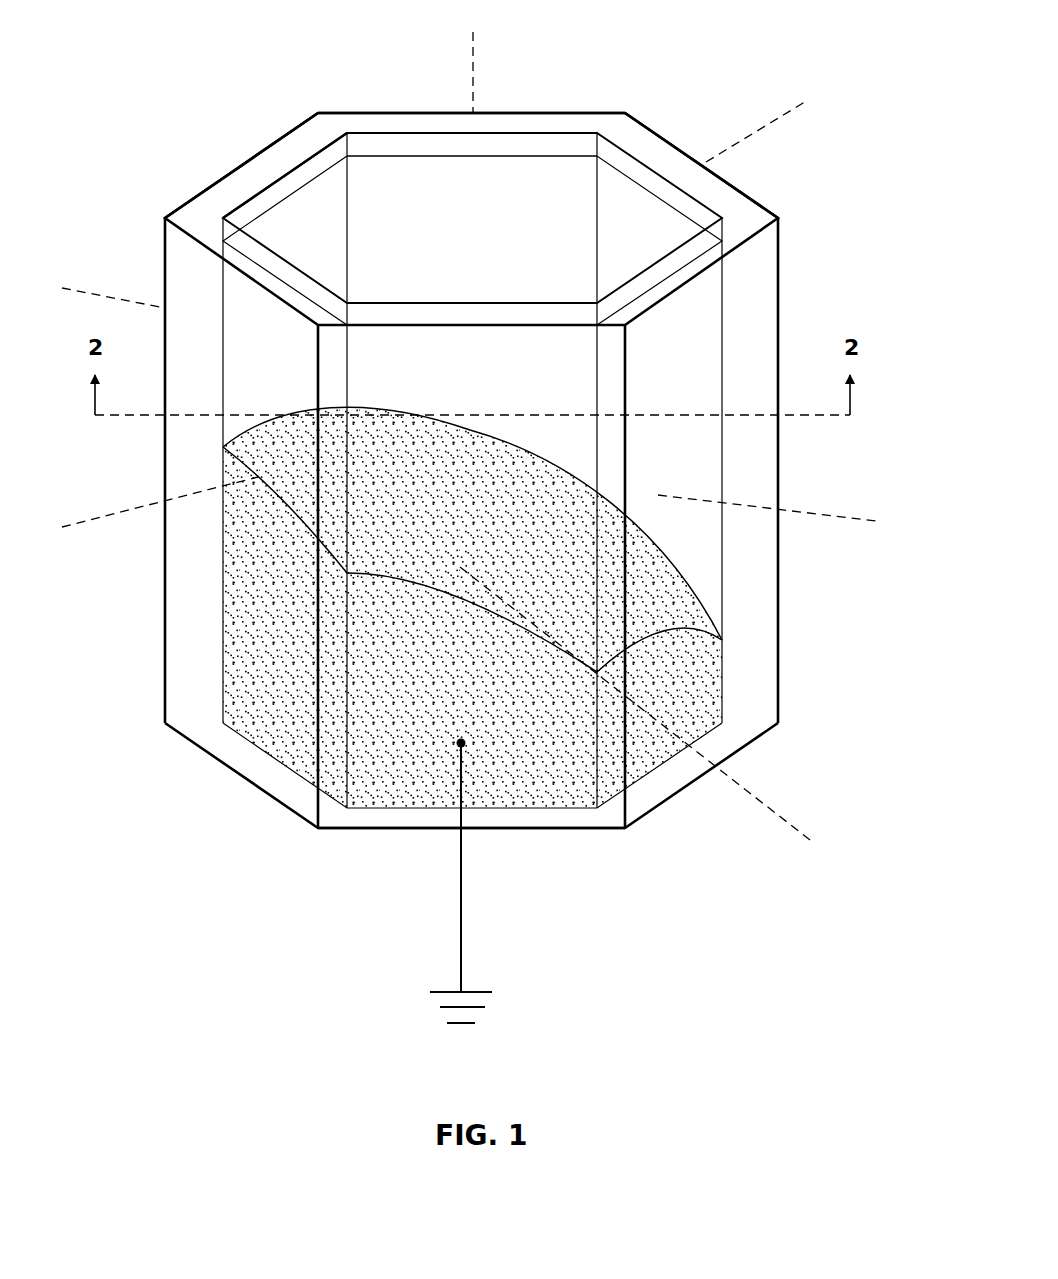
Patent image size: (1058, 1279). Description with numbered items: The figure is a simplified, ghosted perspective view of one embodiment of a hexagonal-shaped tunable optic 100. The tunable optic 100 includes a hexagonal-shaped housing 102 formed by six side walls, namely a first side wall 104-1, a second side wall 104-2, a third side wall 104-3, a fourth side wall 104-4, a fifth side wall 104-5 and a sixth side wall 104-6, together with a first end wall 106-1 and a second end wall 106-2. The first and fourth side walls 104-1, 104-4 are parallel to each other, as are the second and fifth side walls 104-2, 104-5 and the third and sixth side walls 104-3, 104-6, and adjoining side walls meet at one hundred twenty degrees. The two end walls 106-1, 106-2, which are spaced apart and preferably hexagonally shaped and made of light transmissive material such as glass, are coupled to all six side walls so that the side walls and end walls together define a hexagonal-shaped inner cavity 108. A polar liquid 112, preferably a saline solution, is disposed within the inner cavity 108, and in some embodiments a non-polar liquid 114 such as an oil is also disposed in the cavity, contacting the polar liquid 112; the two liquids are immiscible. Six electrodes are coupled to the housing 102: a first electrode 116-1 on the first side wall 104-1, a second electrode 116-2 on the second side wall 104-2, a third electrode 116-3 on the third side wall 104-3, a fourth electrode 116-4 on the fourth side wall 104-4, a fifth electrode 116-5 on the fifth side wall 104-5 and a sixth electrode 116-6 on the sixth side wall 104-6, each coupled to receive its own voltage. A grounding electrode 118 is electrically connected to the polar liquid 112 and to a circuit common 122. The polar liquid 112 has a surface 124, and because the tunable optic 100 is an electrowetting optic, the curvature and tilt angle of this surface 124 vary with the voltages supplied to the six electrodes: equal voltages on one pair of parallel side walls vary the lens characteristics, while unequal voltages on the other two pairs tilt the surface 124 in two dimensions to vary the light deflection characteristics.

The tunable optic 100 is at (142, 52).
The hexagonal-shaped housing 102 is at (792, 258).
The first side wall 104-1 is at (243, 163).
The second side wall 104-2 is at (222, 610).
The third side wall 104-3 is at (378, 730).
The fourth side wall 104-4 is at (752, 493).
The fifth side wall 104-5 is at (740, 190).
The sixth side wall 104-6 is at (393, 113).
The first end wall 106-1 is at (522, 830).
The second end wall 106-2 is at (403, 200).
The hexagonal-shaped inner cavity 108 is at (662, 467).
The polar liquid 112 is at (538, 750).
The non-polar liquid 114 is at (473, 370).
The first electrode 116-1 is at (112, 287).
The second electrode 116-2 is at (108, 515).
The third electrode 116-3 is at (772, 807).
The fourth electrode 116-4 is at (848, 515).
The fifth electrode 116-5 is at (757, 135).
The sixth electrode 116-6 is at (474, 48).
The grounding electrode 118 is at (461, 868).
The circuit common 122 is at (475, 992).
The surface 124 is at (472, 607).